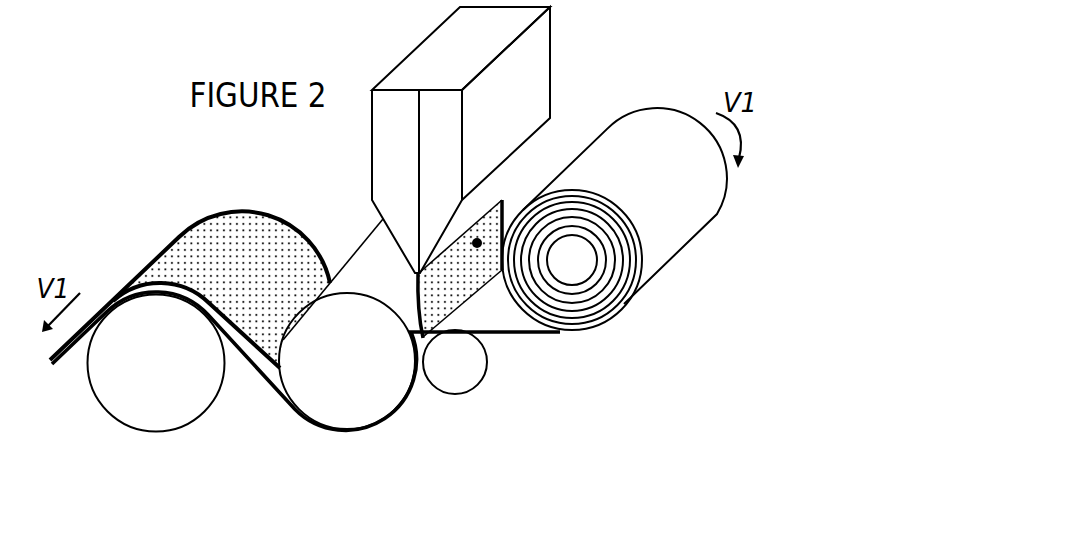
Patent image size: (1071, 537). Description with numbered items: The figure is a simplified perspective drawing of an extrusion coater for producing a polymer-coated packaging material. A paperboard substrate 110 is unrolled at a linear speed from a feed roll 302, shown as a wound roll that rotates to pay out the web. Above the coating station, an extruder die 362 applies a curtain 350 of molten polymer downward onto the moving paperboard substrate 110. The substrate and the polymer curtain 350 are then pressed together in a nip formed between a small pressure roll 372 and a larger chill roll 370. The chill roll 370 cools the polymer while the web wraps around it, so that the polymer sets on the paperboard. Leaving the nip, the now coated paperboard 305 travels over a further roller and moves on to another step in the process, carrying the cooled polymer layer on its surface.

The paperboard substrate 110 is at (497, 312).
The feed roll 302 is at (682, 202).
The coated paperboard 305 is at (195, 250).
The curtain of polymer 350 is at (506, 203).
The extruder die 362 is at (532, 126).
The chill roll 370 is at (320, 377).
The pressure roll 372 is at (432, 375).